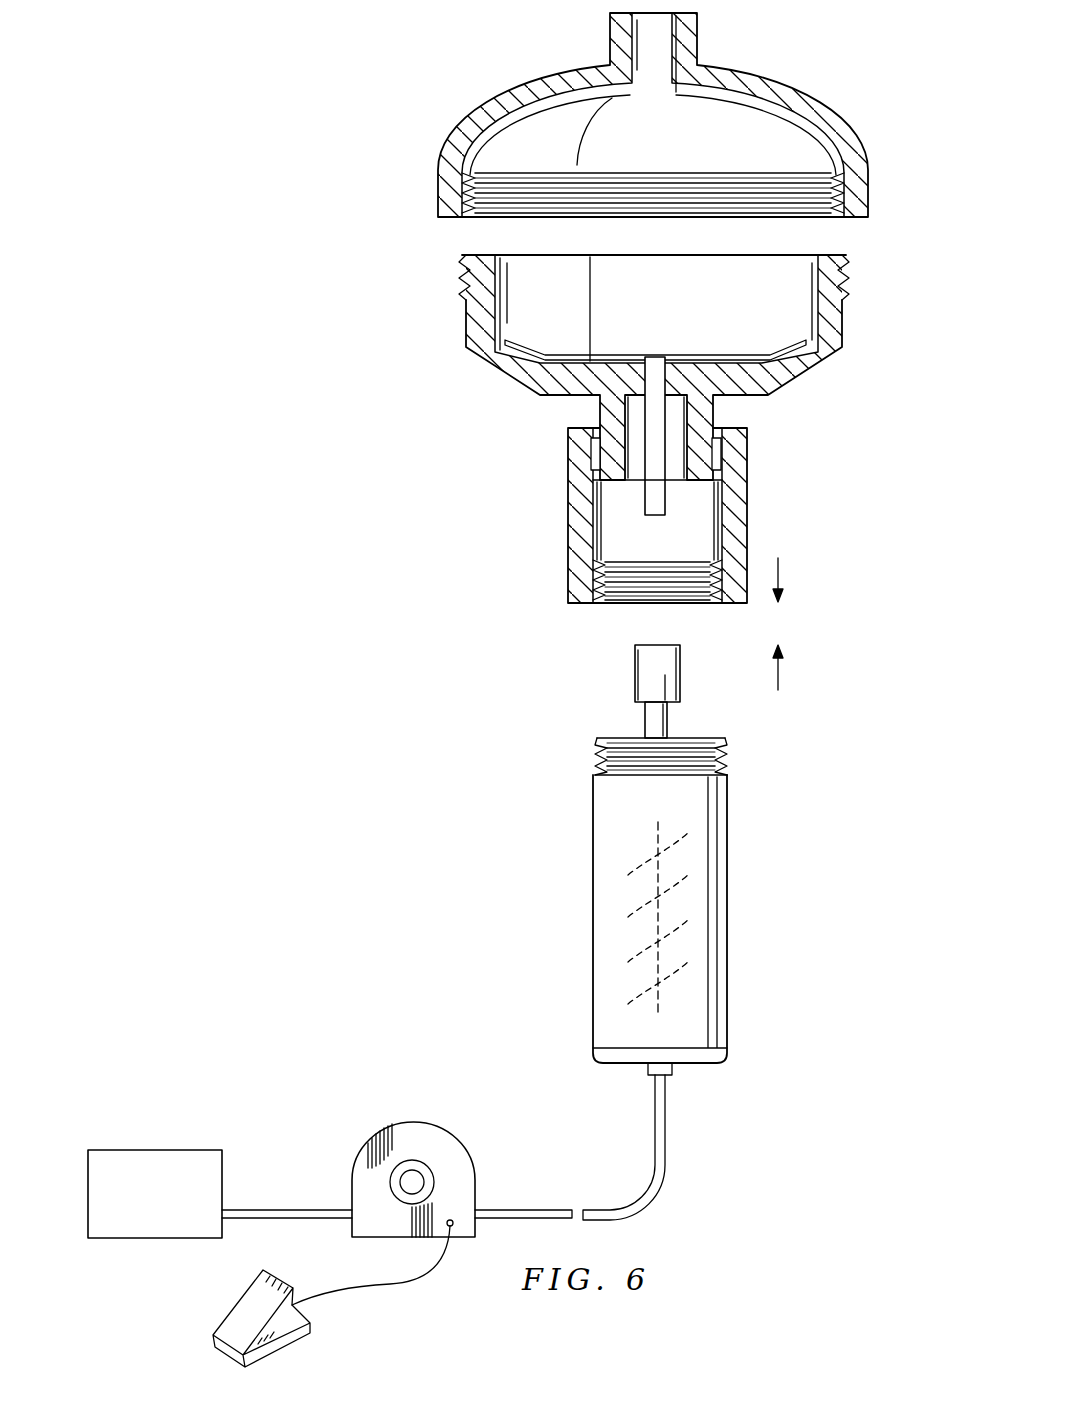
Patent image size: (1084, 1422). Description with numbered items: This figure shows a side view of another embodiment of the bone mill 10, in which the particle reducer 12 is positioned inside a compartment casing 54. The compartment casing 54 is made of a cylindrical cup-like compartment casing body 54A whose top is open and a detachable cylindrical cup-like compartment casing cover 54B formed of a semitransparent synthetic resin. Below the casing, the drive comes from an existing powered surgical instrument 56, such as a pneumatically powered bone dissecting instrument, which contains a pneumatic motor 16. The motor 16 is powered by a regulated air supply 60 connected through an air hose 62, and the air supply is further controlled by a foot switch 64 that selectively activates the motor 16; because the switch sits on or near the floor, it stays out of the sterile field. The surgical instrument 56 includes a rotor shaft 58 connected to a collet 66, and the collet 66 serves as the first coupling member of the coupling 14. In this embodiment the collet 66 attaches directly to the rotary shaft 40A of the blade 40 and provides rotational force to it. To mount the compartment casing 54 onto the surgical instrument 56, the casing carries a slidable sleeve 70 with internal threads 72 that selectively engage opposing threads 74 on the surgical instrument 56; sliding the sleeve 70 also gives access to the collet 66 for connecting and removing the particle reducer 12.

The dispensing system 10 is at (508, 690).
The particle reducer 12 is at (649, 308).
The coupling 14 is at (660, 860).
The pneumatic motor 16 is at (651, 859).
The blade 40 is at (758, 352).
The rotary shaft 40A is at (652, 362).
The compartment casing 54 is at (649, 246).
The compartment casing body 54A is at (860, 152).
The compartment casing cover 54B is at (845, 318).
The surgical instrument 56 is at (689, 925).
The rotor shaft 58 is at (669, 725).
The air supply 60 is at (157, 1150).
The air hose 62 is at (667, 1137).
The foot switch 64 is at (412, 1122).
The collet 66 is at (682, 673).
The slidable sleeve 70 is at (629, 515).
The internal threads 72 is at (637, 580).
The threads 74 is at (595, 762).